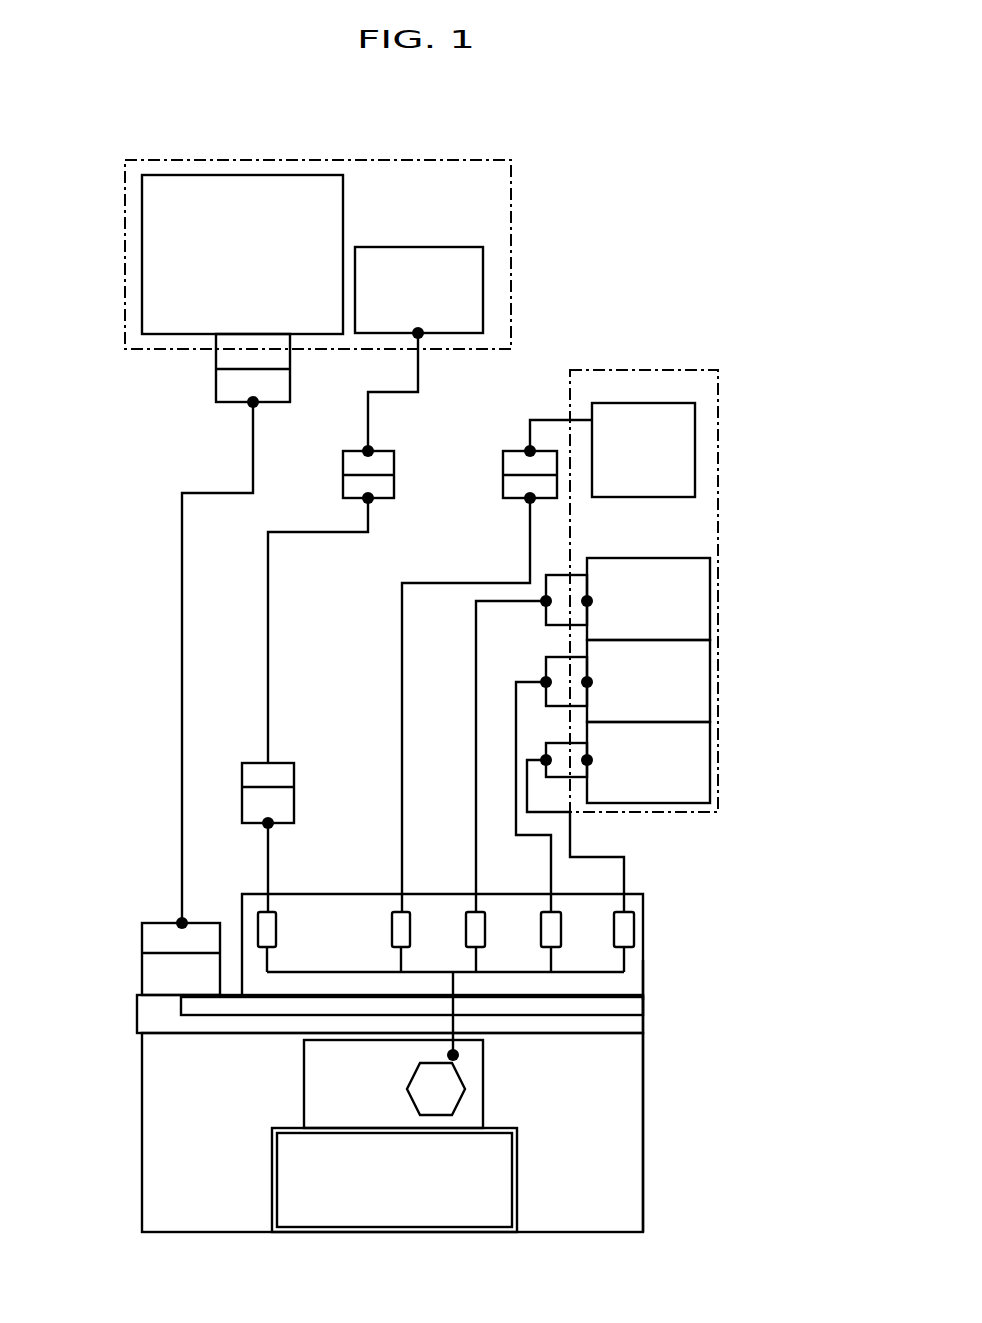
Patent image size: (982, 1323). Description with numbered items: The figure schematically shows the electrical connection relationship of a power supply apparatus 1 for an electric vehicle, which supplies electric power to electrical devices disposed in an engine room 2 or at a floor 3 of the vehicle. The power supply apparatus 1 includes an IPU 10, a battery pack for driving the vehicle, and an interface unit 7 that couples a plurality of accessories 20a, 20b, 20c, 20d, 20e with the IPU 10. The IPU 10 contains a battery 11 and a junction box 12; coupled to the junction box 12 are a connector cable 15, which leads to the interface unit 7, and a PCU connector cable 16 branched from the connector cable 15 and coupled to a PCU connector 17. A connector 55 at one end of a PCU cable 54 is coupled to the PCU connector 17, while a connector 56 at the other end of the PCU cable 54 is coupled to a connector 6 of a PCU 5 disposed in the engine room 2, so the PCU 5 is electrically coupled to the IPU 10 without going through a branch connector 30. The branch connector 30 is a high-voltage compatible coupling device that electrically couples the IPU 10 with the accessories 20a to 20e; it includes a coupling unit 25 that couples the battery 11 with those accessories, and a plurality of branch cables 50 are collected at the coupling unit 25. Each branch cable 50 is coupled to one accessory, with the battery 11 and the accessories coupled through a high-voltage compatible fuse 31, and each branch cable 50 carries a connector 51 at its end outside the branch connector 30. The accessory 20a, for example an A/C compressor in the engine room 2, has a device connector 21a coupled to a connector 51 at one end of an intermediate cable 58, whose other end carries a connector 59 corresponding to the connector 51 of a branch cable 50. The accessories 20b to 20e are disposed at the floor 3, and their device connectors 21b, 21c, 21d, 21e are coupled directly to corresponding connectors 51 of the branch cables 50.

The power supply apparatus 1 is at (768, 252).
The engine room 2 is at (485, 160).
The floor 3 is at (718, 388).
The PCU 5 is at (343, 212).
The connector 6 is at (216, 345).
The interface unit 7 is at (692, 968).
The IPU 10 is at (643, 1150).
The battery 11 is at (490, 1193).
The junction box 12 is at (483, 1053).
The connector cable 15 is at (410, 1021).
The PCU connector cable 16 is at (222, 1017).
The PCU connector 17 is at (157, 980).
The accessory 20a is at (470, 292).
The accessory 20b is at (685, 455).
The accessory 20c is at (693, 597).
The accessory 20d is at (693, 688).
The accessory 20e is at (693, 773).
The device connector 21a is at (385, 462).
The device connector 21b is at (513, 450).
The device connector 21c is at (582, 594).
The device connector 21d is at (588, 668).
The device connector 21e is at (588, 752).
The coupling unit 25 is at (648, 948).
The branch connector 30 is at (630, 975).
The fuse 31 is at (270, 925).
The branch cable 50 is at (400, 716).
The connector 51 is at (390, 487).
The PCU cable 54 is at (182, 638).
The connector 55 is at (157, 935).
The connector 56 is at (220, 390).
The intermediate cable 58 is at (268, 595).
The connector 59 is at (288, 773).